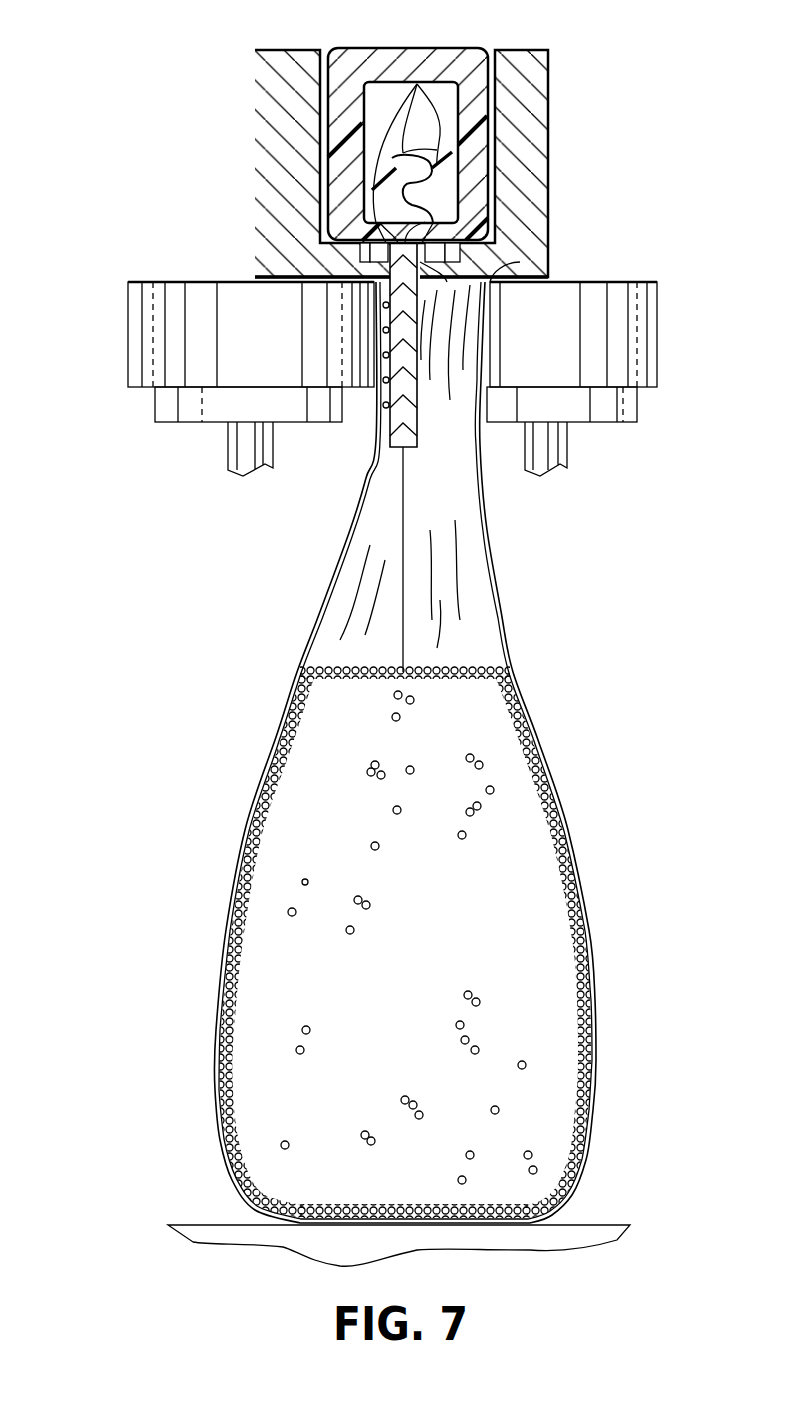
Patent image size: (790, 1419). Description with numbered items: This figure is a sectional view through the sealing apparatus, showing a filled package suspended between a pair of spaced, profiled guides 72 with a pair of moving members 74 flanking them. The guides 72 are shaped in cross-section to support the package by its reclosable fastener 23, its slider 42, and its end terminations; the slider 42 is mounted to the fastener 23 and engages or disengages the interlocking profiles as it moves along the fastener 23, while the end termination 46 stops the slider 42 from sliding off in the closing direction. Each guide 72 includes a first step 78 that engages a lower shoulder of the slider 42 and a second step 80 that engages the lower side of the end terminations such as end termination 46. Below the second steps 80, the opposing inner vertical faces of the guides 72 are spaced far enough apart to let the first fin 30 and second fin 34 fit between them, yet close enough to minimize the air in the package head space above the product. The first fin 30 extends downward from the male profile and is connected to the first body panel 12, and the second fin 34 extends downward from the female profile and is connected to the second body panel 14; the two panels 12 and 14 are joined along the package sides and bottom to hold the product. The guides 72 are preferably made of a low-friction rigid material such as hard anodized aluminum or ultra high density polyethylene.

The first body panel 12 is at (353, 525).
The second body panel 14 is at (483, 540).
The reclosable fastener 23 is at (413, 82).
The first fin 30 is at (382, 402).
The second fin 34 is at (417, 393).
The slider 42 is at (400, 48).
The end termination 46 is at (500, 277).
The profiled guides 72 is at (302, 50).
The moving members 74 is at (128, 338).
The first steps 78 is at (362, 252).
The second steps 80 is at (370, 265).